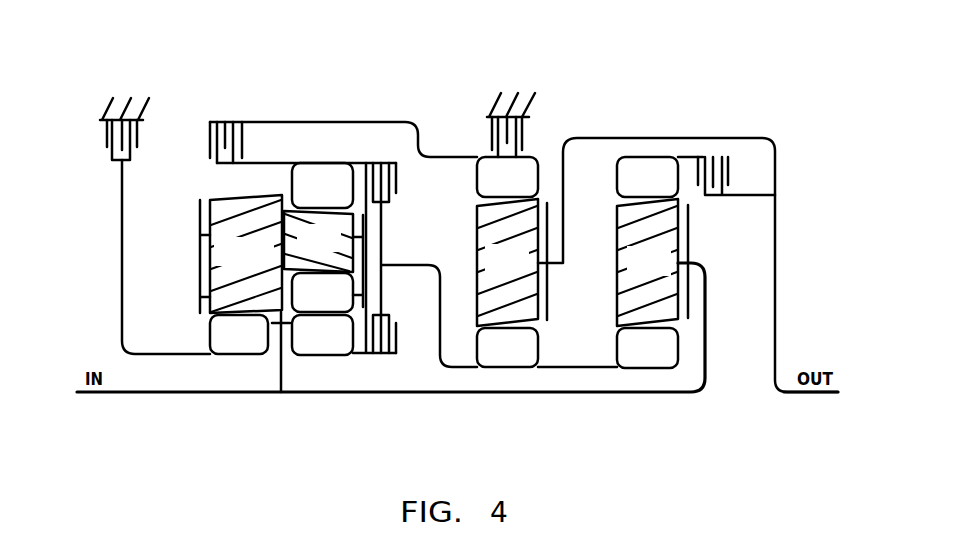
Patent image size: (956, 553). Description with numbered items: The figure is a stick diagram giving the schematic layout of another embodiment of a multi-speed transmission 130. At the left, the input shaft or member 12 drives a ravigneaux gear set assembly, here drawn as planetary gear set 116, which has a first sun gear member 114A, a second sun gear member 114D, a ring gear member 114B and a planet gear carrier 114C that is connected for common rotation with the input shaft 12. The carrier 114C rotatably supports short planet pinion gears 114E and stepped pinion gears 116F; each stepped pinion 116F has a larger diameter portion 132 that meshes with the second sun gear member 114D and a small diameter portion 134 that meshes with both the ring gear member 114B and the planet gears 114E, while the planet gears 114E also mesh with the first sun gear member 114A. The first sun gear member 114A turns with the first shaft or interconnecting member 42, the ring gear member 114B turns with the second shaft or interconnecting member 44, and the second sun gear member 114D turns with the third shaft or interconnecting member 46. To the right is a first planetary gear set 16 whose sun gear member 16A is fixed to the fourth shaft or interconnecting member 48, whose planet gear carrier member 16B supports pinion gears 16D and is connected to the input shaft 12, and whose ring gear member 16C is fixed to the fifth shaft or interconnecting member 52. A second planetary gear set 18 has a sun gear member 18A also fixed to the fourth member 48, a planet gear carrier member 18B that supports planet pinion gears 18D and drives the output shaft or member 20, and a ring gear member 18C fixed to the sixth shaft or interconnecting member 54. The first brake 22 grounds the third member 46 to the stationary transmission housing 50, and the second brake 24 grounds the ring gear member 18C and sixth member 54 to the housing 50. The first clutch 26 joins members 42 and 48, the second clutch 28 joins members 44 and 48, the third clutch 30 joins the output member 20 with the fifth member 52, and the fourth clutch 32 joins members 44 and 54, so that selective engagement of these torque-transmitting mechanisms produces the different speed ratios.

The input shaft or member 12 is at (90, 393).
The first planetary gear set 16 is at (688, 307).
The sun gear member 16A is at (672, 356).
The planet gear carrier member 16B is at (690, 238).
The ring gear member 16C is at (670, 189).
The pinion gears 16D is at (672, 274).
The second planetary gear set 18 is at (540, 308).
The sun gear member 18A is at (529, 356).
The planet gear carrier member 18B is at (548, 297).
The ring gear member 18C is at (527, 189).
The planet pinion gears 18D is at (529, 271).
The output shaft or member 20 is at (565, 203).
The first brake 22 is at (106, 143).
The second brake 24 is at (490, 138).
The first clutch 26 is at (397, 356).
The second clutch 28 is at (397, 188).
The third clutch 30 is at (732, 177).
The fourth clutch 32 is at (208, 139).
The first shaft or interconnecting member 42 is at (358, 355).
The second shaft or interconnecting member 44 is at (250, 162).
The third shaft or interconnecting member 46 is at (120, 232).
The fourth shaft or interconnecting member 48 is at (437, 320).
The stationary member or transmission housing 50 is at (110, 104).
The fifth shaft or interconnecting member 52 is at (687, 157).
The sixth shaft or interconnecting member 54 is at (390, 122).
The first sun gear member 114A is at (346, 346).
The ring gear member 114B is at (348, 196).
The planet gear carrier 114C is at (197, 262).
The second sun gear member 114D is at (237, 343).
The planet pinion gears 114E is at (346, 301).
The compound planetary gear set 116 is at (210, 312).
The stepped pinion gears 116F is at (268, 263).
The multi-speed transmission 130 is at (746, 61).
The larger diameter portion 132 is at (212, 244).
The small diameter portion 134 is at (338, 251).